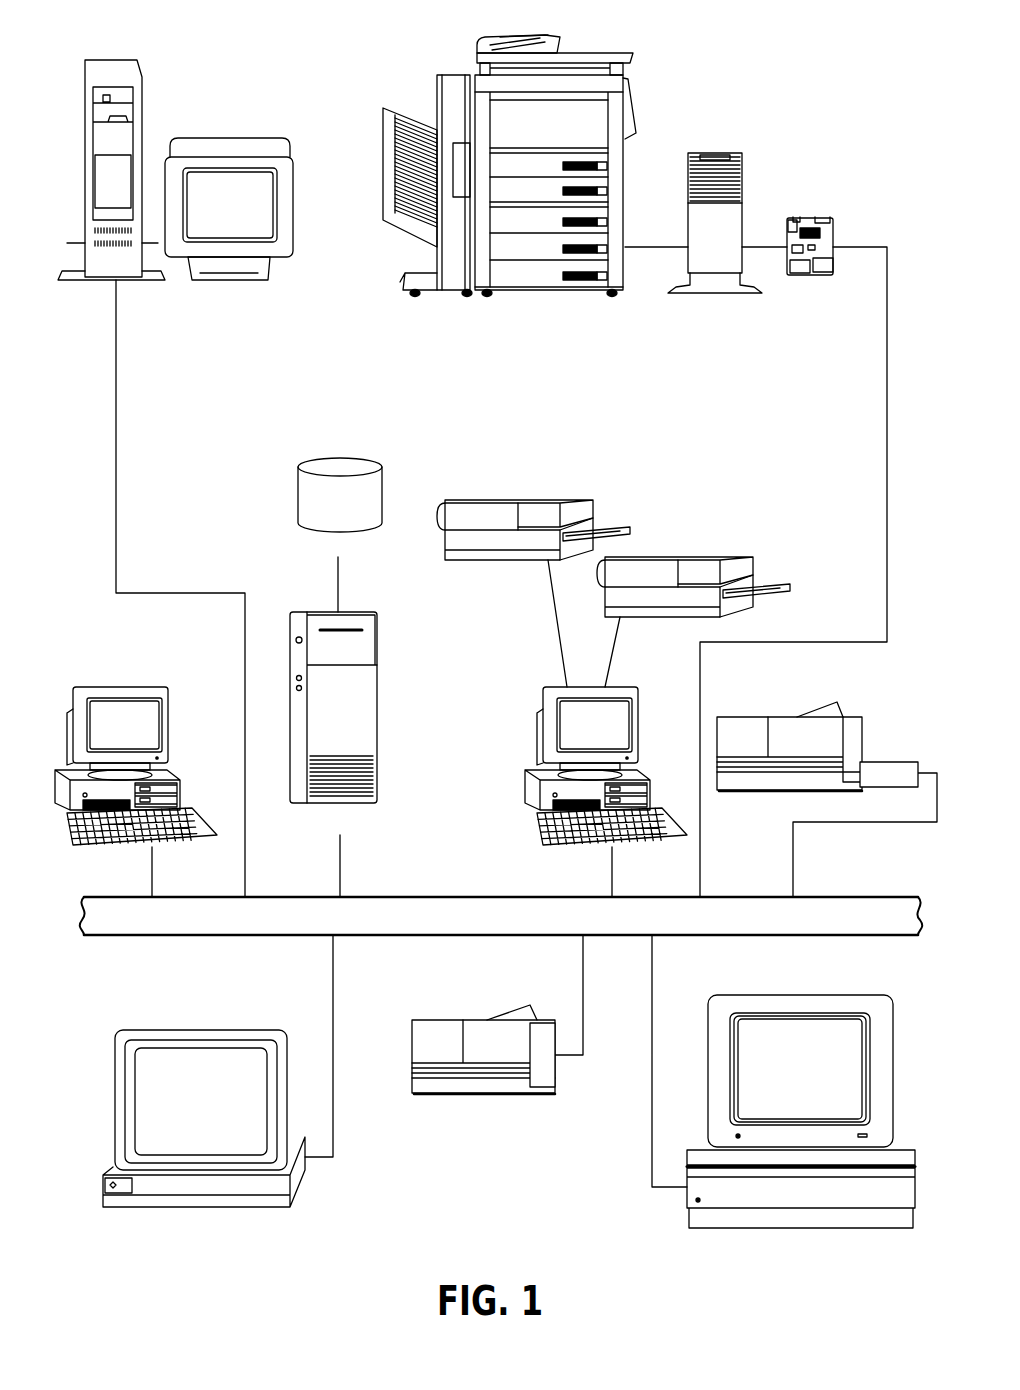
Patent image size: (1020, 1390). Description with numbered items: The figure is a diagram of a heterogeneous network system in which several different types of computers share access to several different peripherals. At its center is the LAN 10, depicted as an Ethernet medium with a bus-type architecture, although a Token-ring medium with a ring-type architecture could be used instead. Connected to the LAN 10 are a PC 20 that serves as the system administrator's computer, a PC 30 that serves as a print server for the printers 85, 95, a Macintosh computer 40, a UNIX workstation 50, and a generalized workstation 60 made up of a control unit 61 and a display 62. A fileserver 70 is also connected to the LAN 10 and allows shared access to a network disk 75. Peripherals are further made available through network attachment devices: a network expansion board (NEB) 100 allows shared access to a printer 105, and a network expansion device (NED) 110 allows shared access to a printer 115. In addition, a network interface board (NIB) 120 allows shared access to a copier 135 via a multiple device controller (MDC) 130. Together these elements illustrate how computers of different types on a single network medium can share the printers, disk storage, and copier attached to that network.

The LAN 10 is at (412, 895).
The PC 20 is at (168, 737).
The PC 30 is at (638, 737).
The Macintosh computer 40 is at (687, 1207).
The UNIX workstation 50 is at (237, 1028).
The generalized workstation 60 is at (179, 171).
The control unit 61 is at (139, 62).
The display 62 is at (250, 137).
The fileserver 70 is at (377, 703).
The network disk 75 is at (298, 502).
The printer 85 is at (597, 520).
The printer 95 is at (687, 557).
The network expansion board (NEB) 100 is at (556, 1088).
The printer 105 is at (433, 1018).
The network expansion device (NED) 110 is at (893, 762).
The printer 115 is at (740, 715).
The network interface board (NIB) 120 is at (831, 237).
The multiple device controller (MDC) 130 is at (704, 153).
The copier 135 is at (576, 53).